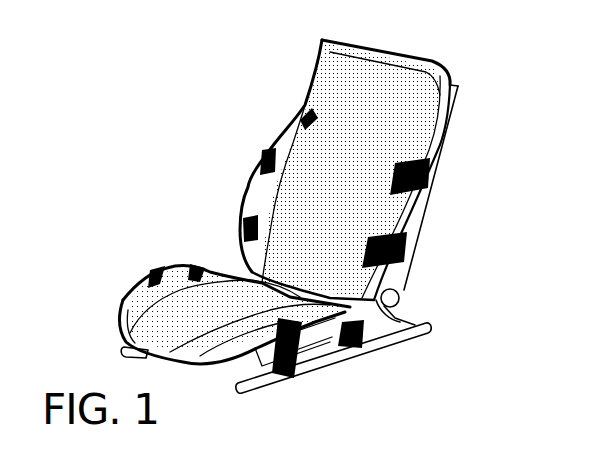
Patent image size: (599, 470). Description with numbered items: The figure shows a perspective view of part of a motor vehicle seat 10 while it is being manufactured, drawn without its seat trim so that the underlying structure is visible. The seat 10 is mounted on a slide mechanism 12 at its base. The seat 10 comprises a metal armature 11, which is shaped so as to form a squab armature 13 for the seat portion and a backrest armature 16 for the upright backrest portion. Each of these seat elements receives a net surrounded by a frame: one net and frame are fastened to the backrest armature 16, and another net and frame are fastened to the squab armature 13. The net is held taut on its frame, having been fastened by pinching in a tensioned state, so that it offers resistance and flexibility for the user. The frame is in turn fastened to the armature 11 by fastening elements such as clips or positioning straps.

The motor vehicle seat 10 is at (186, 138).
The armature 11 is at (346, 340).
The slide mechanism 12 is at (267, 385).
The squab armature 13 is at (308, 338).
The backrest armature 16 is at (456, 110).